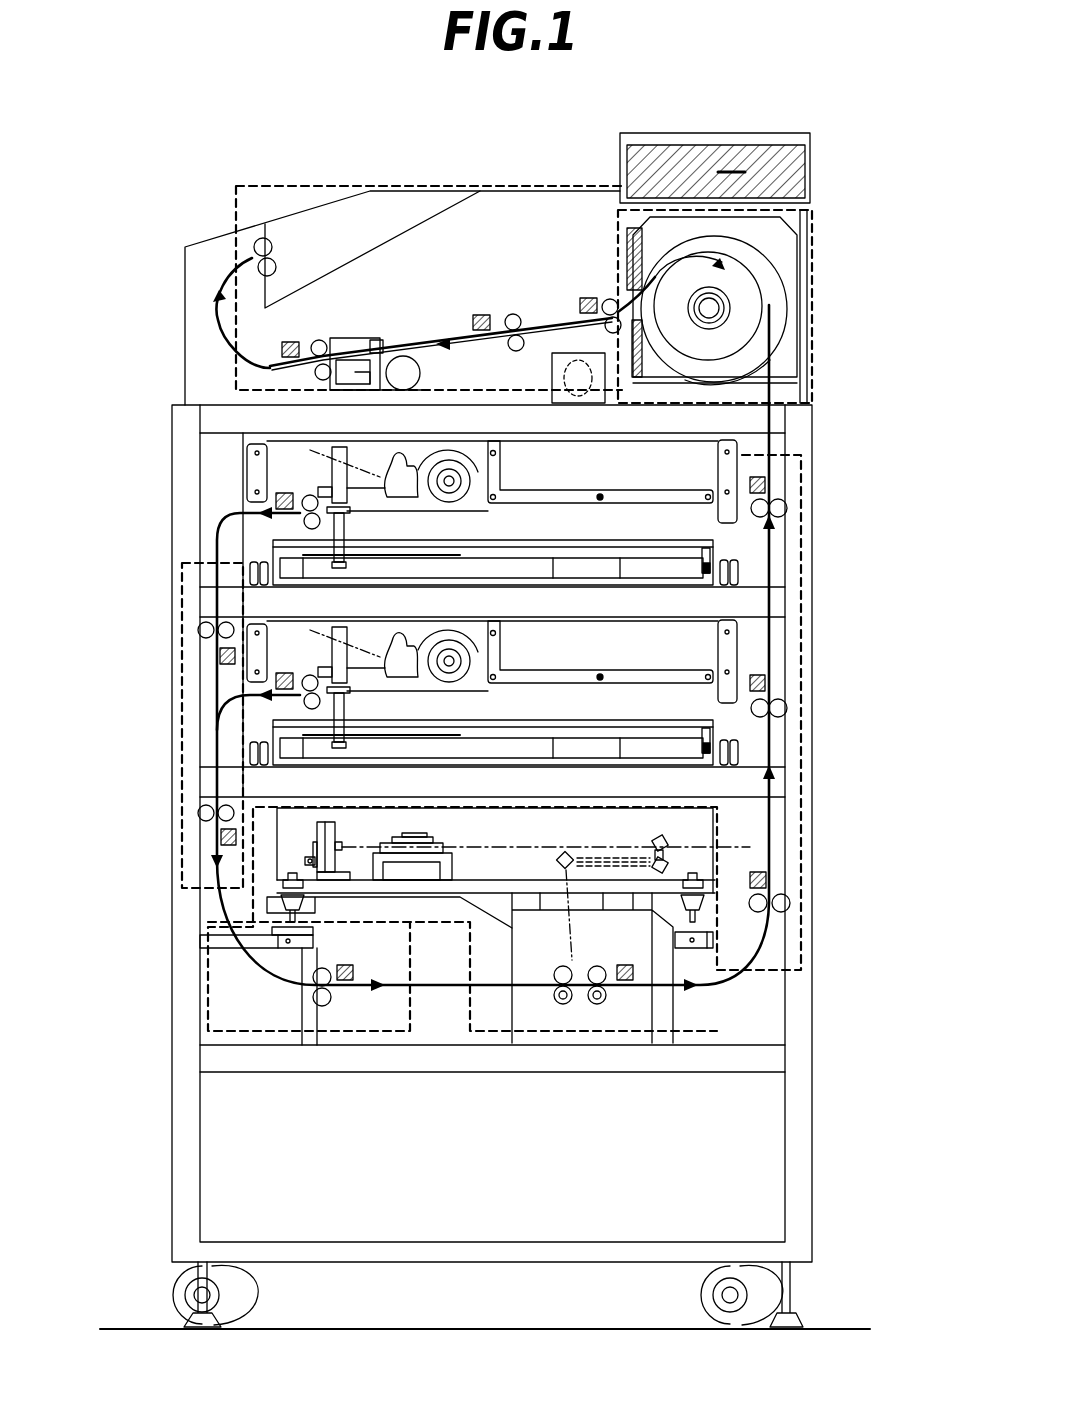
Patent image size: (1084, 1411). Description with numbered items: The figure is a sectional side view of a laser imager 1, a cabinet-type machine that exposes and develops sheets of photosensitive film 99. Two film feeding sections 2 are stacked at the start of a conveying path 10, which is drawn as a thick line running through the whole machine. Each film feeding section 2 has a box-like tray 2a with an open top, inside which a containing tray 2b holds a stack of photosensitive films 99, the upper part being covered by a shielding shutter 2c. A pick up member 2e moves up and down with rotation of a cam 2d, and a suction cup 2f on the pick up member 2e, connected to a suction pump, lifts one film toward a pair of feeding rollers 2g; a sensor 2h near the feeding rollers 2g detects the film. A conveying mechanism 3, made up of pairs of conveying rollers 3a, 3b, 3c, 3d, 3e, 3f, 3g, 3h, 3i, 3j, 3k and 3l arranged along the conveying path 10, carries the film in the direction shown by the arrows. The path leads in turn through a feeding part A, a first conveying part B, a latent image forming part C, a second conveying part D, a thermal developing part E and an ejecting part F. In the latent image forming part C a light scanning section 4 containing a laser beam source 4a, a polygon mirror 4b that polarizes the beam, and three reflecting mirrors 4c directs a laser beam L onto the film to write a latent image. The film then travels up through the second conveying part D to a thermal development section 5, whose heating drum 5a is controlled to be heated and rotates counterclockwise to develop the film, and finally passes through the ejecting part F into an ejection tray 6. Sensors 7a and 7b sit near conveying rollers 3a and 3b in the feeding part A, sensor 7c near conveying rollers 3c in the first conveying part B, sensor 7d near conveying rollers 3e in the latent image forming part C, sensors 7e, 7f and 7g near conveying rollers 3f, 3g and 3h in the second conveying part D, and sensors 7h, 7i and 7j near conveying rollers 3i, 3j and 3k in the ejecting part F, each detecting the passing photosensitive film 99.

The laser imager 1 is at (490, 167).
The film feeding section 2 is at (576, 476).
The tray 2a is at (703, 568).
The containing tray 2b is at (533, 575).
The shielding shutter 2c is at (570, 556).
The cam 2d is at (505, 488).
The pick up member 2e is at (396, 466).
The suction cup 2f is at (330, 456).
The feeding rollers 2g is at (303, 500).
The sensor 2h is at (276, 500).
The conveying mechanism 3 is at (394, 332).
The conveying rollers 3a is at (202, 628).
The conveying rollers 3b is at (203, 823).
The conveying rollers 3c is at (322, 1006).
The conveying rollers 3d is at (563, 1006).
The conveying rollers 3e is at (597, 1006).
The conveying rollers 3f is at (784, 912).
The conveying rollers 3g is at (786, 708).
The conveying rollers 3h is at (785, 505).
The conveying rollers 3i is at (607, 303).
The conveying rollers 3j is at (509, 316).
The conveying rollers 3k is at (316, 358).
The conveying rollers 3l is at (256, 242).
The light scanning section 4 is at (567, 839).
The laser beam source 4a is at (336, 830).
The polygon mirror 4b is at (412, 836).
The reflecting mirror 4c is at (655, 860).
The thermal development section 5 is at (770, 254).
The heating drum 5a is at (742, 318).
The ejection tray 6 is at (287, 242).
The sensor 7a is at (220, 655).
The sensor 7b is at (222, 845).
The sensor 7c is at (348, 982).
The sensor 7d is at (630, 982).
The sensor 7e is at (766, 880).
The sensor 7f is at (767, 677).
The sensor 7g is at (762, 478).
The sensor 7h is at (581, 299).
The sensor 7i is at (478, 314).
The sensor 7j is at (294, 344).
The conveying path 10 is at (417, 340).
The photosensitive film 99 is at (448, 554).
The feeding part A is at (182, 728).
The first conveying part B is at (265, 1037).
The latent image forming part C is at (495, 1034).
The second conveying part D is at (801, 773).
The thermal developing part E is at (813, 260).
The ejecting part F is at (533, 186).
The laser beam L is at (490, 847).